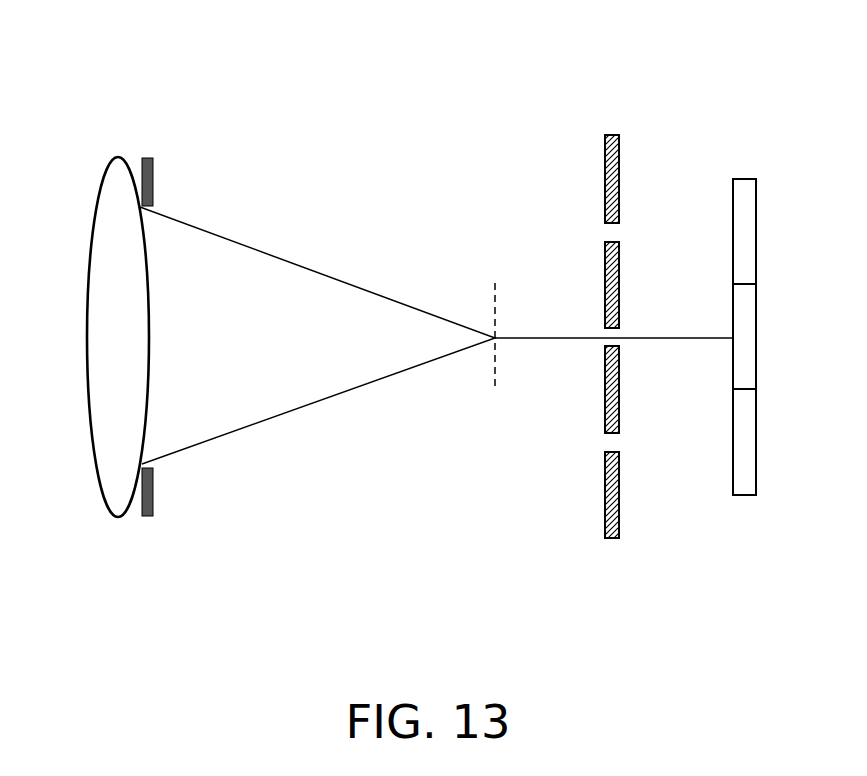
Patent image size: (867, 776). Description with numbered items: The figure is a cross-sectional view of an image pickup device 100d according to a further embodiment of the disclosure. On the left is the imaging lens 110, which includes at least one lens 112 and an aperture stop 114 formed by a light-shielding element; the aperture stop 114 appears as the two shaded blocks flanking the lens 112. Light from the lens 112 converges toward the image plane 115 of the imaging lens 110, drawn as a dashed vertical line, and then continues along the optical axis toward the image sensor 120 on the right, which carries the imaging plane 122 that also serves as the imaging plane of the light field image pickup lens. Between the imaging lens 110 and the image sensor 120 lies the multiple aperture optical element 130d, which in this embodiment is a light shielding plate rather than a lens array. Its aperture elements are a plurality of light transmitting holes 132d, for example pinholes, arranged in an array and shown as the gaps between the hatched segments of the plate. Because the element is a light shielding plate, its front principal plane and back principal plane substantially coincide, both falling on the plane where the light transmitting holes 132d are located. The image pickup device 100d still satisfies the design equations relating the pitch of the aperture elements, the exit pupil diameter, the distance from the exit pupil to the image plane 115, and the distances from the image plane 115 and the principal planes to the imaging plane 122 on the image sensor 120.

The image pickup device 100d is at (822, 613).
The imaging lens 110 is at (131, 307).
The lens 112 is at (110, 200).
The aperture stop 114 is at (153, 181).
The image plane 115 is at (493, 377).
The image sensor 120 is at (717, 328).
The imaging plane 122 is at (733, 443).
The multiple aperture optical element 130d is at (569, 282).
The light transmitting holes 132d is at (592, 333).